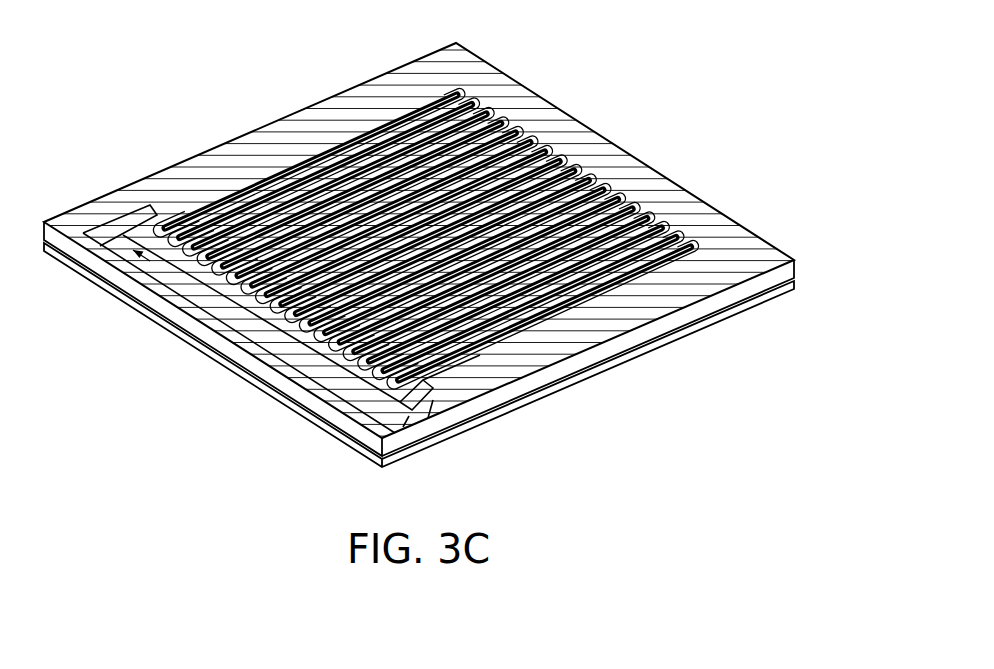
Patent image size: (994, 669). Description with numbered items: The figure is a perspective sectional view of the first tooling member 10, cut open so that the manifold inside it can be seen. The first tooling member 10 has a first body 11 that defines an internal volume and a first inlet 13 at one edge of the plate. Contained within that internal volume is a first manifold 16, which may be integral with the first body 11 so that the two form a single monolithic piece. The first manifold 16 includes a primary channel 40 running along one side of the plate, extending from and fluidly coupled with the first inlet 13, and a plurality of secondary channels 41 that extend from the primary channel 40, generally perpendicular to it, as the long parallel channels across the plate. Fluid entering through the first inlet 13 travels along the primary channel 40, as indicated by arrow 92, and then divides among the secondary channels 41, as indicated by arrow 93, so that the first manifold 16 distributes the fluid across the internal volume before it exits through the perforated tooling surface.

The first tooling member 10 is at (775, 140).
The first body 11 is at (795, 273).
The first inlet 13 is at (406, 426).
The first manifold 16 is at (372, 388).
The primary channel 40 is at (279, 352).
The secondary channels 41 is at (236, 278).
The arrow 92 is at (162, 268).
The arrow 93 is at (217, 240).